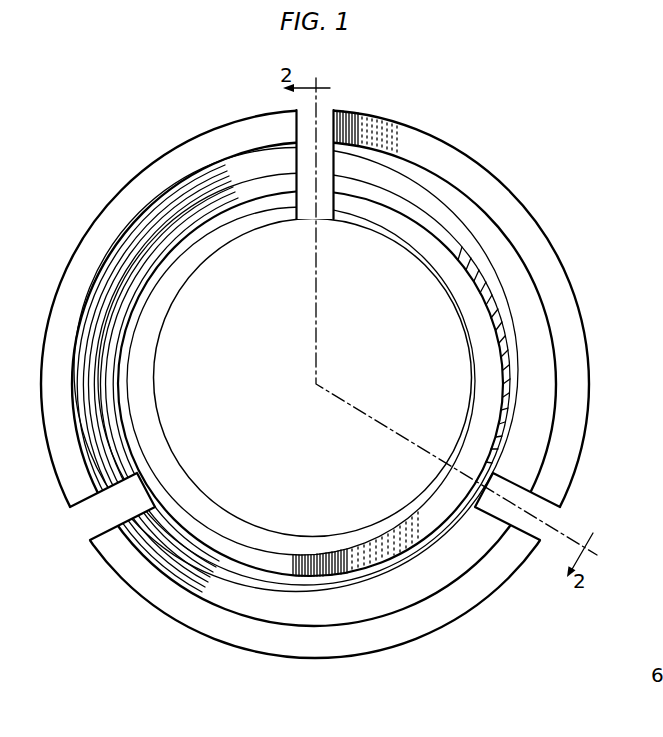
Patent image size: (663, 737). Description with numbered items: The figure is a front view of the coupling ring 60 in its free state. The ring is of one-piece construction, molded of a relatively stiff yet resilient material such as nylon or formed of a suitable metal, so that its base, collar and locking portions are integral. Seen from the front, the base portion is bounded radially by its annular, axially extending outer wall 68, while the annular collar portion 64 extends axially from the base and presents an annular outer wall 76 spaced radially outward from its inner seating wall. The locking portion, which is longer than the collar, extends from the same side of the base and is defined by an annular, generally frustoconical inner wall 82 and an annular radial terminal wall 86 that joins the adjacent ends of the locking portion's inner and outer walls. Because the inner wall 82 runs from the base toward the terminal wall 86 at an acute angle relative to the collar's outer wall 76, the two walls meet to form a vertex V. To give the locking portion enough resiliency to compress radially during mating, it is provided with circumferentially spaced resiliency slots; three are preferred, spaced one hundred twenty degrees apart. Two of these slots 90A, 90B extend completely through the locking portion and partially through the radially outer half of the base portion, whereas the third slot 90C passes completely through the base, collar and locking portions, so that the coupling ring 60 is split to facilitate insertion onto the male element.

The coupling ring 60 is at (471, 145).
The annular collar portion 64 is at (473, 347).
The outer wall of base portion 68 is at (369, 383).
The outer wall of collar portion 76 is at (520, 384).
The inner wall of locking portion 82 is at (498, 232).
The terminal wall of locking portion 86 is at (540, 243).
The vertex V is at (503, 309).
The resiliency slot 90A is at (550, 501).
The resiliency slot 90B is at (92, 545).
The resiliency slot 90C is at (331, 122).